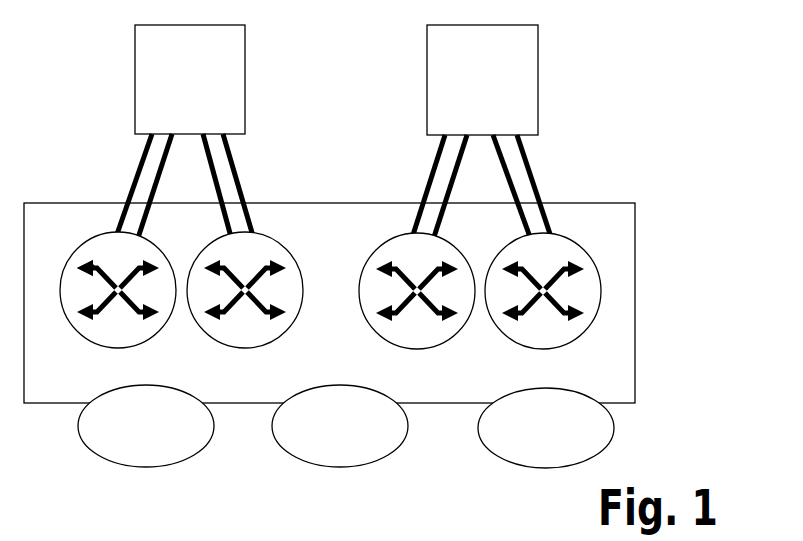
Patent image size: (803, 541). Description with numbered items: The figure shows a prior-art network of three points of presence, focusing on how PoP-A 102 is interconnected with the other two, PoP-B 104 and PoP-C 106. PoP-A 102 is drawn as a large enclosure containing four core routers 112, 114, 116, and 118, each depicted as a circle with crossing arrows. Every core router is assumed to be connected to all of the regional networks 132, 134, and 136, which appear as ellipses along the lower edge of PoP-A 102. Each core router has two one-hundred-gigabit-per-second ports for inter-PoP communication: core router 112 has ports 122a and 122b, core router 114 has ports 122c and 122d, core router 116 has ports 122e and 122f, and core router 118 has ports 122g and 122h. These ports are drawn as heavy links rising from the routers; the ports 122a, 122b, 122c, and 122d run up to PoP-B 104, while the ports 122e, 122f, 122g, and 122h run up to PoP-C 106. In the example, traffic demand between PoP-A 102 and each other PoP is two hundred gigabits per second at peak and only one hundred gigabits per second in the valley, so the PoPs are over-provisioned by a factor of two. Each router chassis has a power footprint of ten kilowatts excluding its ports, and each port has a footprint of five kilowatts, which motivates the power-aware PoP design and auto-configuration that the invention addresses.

The PoP-A 102 is at (84, 231).
The PoP-B 104 is at (172, 99).
The PoP-C 106 is at (466, 101).
The core router 112 is at (100, 339).
The core router 114 is at (227, 339).
The core router 116 is at (395, 341).
The core router 118 is at (522, 341).
The 100 Gbps port 122a is at (147, 148).
The 100 Gbps port 122b is at (155, 177).
The 100 Gbps port 122c is at (229, 148).
The 100 Gbps port 122d is at (218, 177).
The 100 Gbps port 122e is at (441, 148).
The 100 Gbps port 122f is at (451, 177).
The 100 Gbps port 122g is at (523, 148).
The 100 Gbps port 122h is at (514, 177).
The regional network 132 is at (129, 451).
The regional network 134 is at (322, 451).
The regional network 136 is at (525, 454).